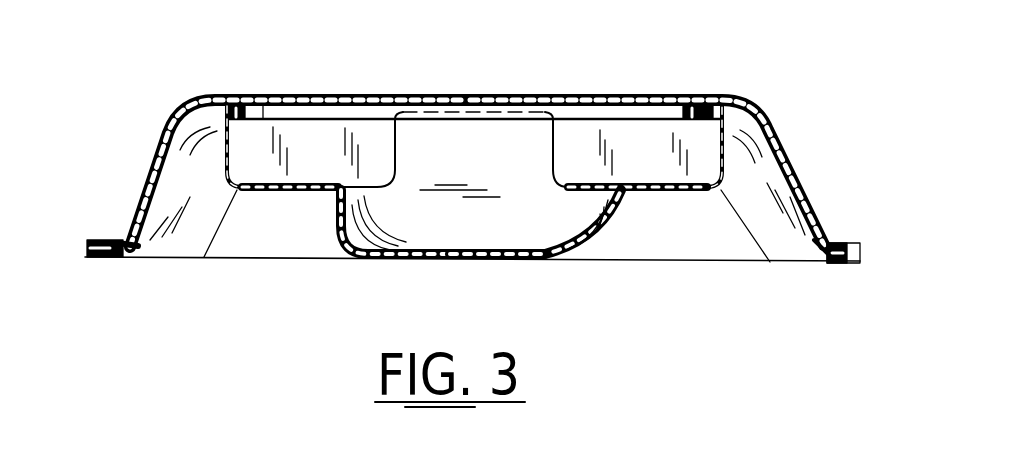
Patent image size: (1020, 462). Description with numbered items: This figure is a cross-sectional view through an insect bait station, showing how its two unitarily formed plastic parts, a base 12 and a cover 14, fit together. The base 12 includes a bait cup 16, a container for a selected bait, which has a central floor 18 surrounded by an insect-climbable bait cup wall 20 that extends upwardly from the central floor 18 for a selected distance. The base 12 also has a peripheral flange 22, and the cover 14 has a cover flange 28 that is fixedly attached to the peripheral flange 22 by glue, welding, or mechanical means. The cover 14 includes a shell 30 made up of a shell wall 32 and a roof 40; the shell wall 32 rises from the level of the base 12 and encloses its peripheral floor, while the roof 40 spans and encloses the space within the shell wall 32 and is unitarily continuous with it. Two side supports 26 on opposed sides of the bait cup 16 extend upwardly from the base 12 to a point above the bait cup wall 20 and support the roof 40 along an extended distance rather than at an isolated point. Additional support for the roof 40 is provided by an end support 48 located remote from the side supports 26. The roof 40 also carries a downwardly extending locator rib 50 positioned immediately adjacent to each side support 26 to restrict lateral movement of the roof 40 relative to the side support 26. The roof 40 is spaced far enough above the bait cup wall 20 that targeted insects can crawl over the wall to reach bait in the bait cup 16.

The base 12 is at (107, 257).
The cover 14 is at (107, 242).
The bait cup 16 is at (357, 232).
The central floor 18 is at (471, 256).
The bait cup wall 20 is at (547, 260).
The peripheral flange 22 is at (850, 265).
The side support 26 is at (540, 130).
The cover flange 28 is at (847, 247).
The shell 30 is at (760, 113).
The shell wall 32 is at (163, 131).
The roof 40 is at (425, 99).
The end support 48 is at (204, 257).
The locator rib 50 is at (240, 99).